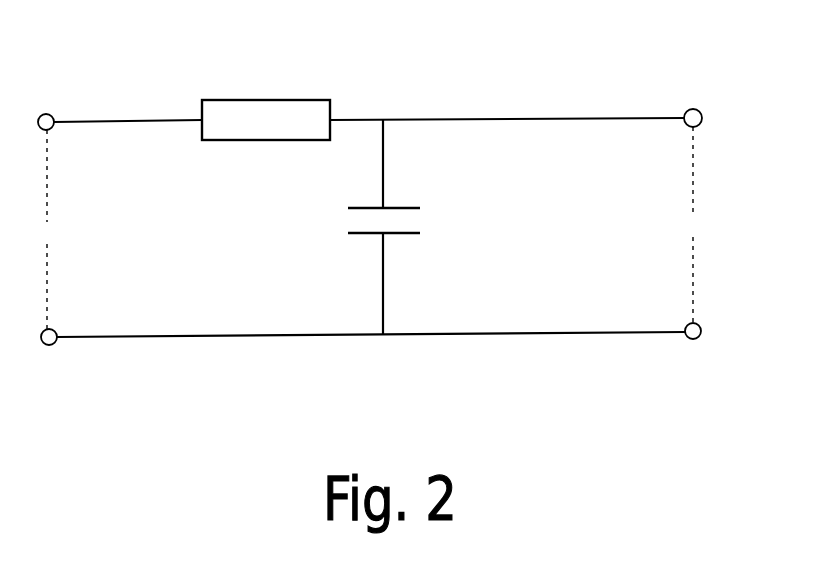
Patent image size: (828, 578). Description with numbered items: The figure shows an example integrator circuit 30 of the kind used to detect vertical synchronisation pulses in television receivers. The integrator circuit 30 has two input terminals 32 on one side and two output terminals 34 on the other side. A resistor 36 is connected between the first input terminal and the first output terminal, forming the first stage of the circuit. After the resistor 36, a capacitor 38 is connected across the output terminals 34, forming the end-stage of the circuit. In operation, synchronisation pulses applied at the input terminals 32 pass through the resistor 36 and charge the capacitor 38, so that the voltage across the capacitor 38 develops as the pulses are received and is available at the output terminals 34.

The integrator circuit 30 is at (176, 371).
The input terminals 32 is at (49, 114).
The output terminals 34 is at (696, 109).
The resistor 36 is at (284, 111).
The capacitor 38 is at (402, 208).